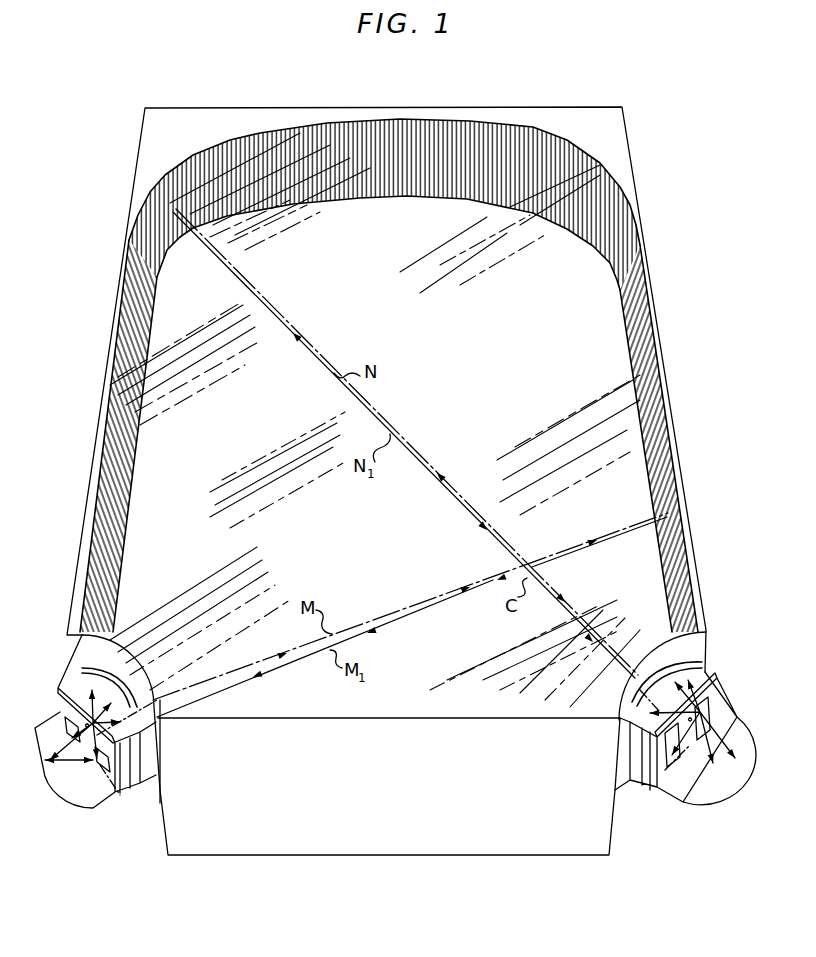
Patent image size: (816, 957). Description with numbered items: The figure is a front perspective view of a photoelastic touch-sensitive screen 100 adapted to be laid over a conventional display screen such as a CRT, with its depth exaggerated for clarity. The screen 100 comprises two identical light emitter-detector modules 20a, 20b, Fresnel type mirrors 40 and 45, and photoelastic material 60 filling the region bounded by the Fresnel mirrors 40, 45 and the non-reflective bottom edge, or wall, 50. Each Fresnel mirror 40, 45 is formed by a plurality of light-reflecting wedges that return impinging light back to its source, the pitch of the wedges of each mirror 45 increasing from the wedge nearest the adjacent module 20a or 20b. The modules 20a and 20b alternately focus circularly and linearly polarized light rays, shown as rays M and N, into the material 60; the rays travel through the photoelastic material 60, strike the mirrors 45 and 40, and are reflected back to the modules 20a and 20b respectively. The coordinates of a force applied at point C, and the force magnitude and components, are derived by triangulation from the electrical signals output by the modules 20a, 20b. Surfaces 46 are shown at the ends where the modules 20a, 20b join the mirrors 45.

The photoelastic touch-sensitive screen 100 is at (395, 915).
The non-reflective bottom edge 50 is at (548, 845).
The Fresnel type mirror 40 is at (387, 190).
The Fresnel type mirror 45 is at (128, 442).
The cylindrical end surfaces 46 is at (138, 662).
The photoelastic material 60 is at (484, 336).
The light emitter-detector module 20a is at (104, 840).
The light emitter-detector module 20b is at (725, 830).